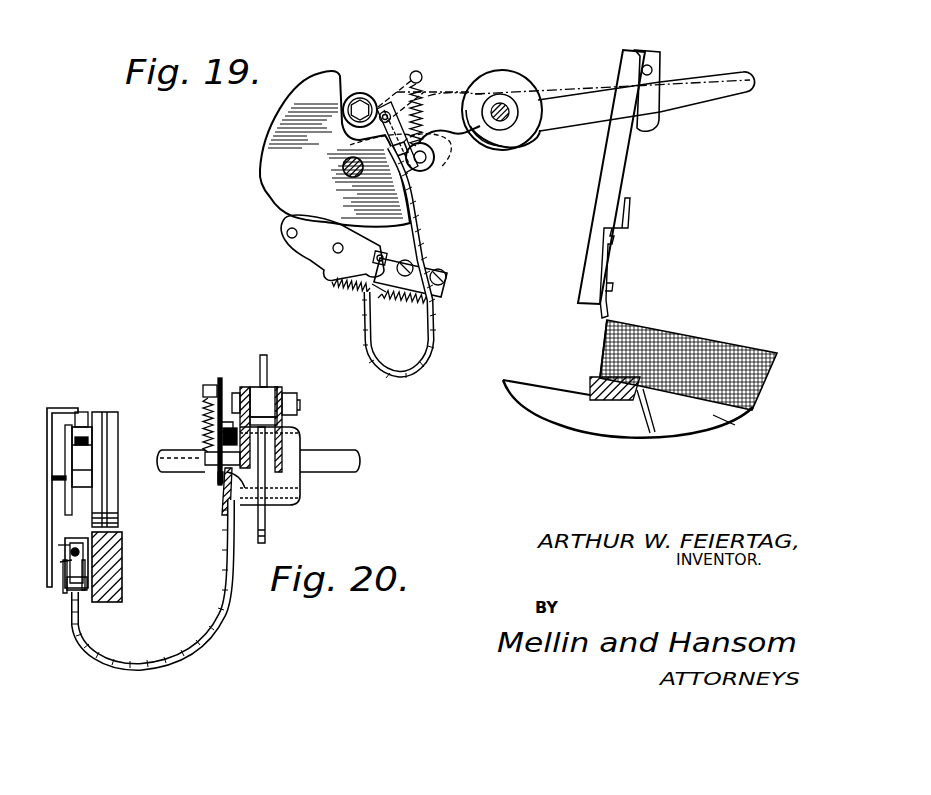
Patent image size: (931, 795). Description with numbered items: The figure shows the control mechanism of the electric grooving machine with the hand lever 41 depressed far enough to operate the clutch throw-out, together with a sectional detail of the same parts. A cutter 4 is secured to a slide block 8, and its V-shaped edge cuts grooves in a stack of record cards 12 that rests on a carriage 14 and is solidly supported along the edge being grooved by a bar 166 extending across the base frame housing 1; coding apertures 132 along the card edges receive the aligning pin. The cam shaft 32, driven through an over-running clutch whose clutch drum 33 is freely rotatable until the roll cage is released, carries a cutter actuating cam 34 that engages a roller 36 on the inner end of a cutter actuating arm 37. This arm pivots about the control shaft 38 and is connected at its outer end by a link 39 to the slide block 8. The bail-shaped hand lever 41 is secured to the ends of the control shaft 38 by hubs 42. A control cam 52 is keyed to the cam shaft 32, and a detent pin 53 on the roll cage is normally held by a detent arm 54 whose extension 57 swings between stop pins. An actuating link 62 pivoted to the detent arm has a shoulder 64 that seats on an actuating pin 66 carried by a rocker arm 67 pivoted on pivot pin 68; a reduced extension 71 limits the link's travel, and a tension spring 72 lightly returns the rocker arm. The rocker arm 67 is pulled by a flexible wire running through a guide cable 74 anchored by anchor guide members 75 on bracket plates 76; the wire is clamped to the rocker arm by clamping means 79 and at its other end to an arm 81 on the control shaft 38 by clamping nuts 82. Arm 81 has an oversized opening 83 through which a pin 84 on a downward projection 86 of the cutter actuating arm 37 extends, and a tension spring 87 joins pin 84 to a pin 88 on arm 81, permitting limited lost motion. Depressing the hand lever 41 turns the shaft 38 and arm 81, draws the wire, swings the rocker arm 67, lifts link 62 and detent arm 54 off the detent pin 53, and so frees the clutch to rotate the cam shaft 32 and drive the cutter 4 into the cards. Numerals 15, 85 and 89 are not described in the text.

In FIG. 19, the base frame housing 1 is at (547, 405).
In FIG. 19, the cutter 4 is at (613, 263).
In FIG. 19, the slide block 8 is at (612, 172).
In FIG. 19, the record cards 12 is at (739, 352).
In FIG. 19, the carriage 14 is at (726, 420).
In FIG. 19, the link 15 is at (363, 146).
In FIG. 19, the cam shaft 32 is at (343, 171).
In FIG. 20, the cam shaft 32 is at (83, 468).
In FIG. 20, the clutch drum 33 is at (107, 418).
In FIG. 19, the cutter actuating cam 34 is at (272, 199).
In FIG. 20, the cutter actuating cam 34 is at (266, 532).
In FIG. 19, the roller 36 is at (380, 102).
In FIG. 20, the roller 36 is at (267, 392).
In FIG. 19, the cutter actuating arm 37 is at (397, 137).
In FIG. 19, the control shaft 38 is at (506, 106).
In FIG. 19, the link 39 is at (656, 54).
In FIG. 19, the hand lever 41 is at (706, 96).
In FIG. 19, the hubs 42 is at (522, 146).
In FIG. 20, the control cam 52 is at (65, 445).
In FIG. 20, the detent pin 53 is at (88, 433).
In FIG. 20, the detent arm 54 is at (82, 413).
In FIG. 19, the extension 57 is at (441, 90).
In FIG. 20, the extension 57 is at (242, 388).
In FIG. 20, the actuating link 62 is at (50, 500).
In FIG. 20, the shoulder 64 is at (65, 542).
In FIG. 19, the actuating pin 66 is at (284, 234).
In FIG. 20, the actuating pin 66 is at (70, 552).
In FIG. 19, the rocker arm 67 is at (314, 250).
In FIG. 20, the rocker arm 67 is at (73, 538).
In FIG. 19, the pivot pin 68 is at (342, 244).
In FIG. 20, the reduced extension 71 is at (50, 577).
In FIG. 19, the tension spring 72 is at (346, 291).
In FIG. 19, the guide cable 74 is at (416, 368).
In FIG. 20, the guide cable 74 is at (230, 614).
In FIG. 19, the anchor guide members 75 is at (373, 297).
In FIG. 20, the anchor guide members 75 is at (75, 570).
In FIG. 19, the bracket plates 76 is at (438, 142).
In FIG. 20, the bracket plates 76 is at (83, 572).
In FIG. 19, the clamping means 79 is at (386, 255).
In FIG. 20, the clamping means 79 is at (73, 555).
In FIG. 19, the arm 81 is at (426, 84).
In FIG. 20, the arm 81 is at (204, 408).
In FIG. 19, the clamping nuts 82 is at (388, 111).
In FIG. 20, the clamping nuts 82 is at (223, 438).
In FIG. 19, the opening 83 is at (436, 160).
In FIG. 19, the pin 84 is at (423, 163).
In FIG. 20, the pin 84 is at (217, 462).
In FIG. 20, the arm 85 is at (223, 482).
In FIG. 20, the projection 86 is at (246, 468).
In FIG. 19, the tension spring 87 is at (440, 106).
In FIG. 20, the tension spring 87 is at (222, 424).
In FIG. 19, the pin 88 is at (418, 70).
In FIG. 20, the pin 88 is at (203, 388).
In FIG. 20, the key 89 is at (58, 471).
In FIG. 19, the coding apertures 132 is at (603, 333).
In FIG. 19, the bar 166 is at (590, 385).